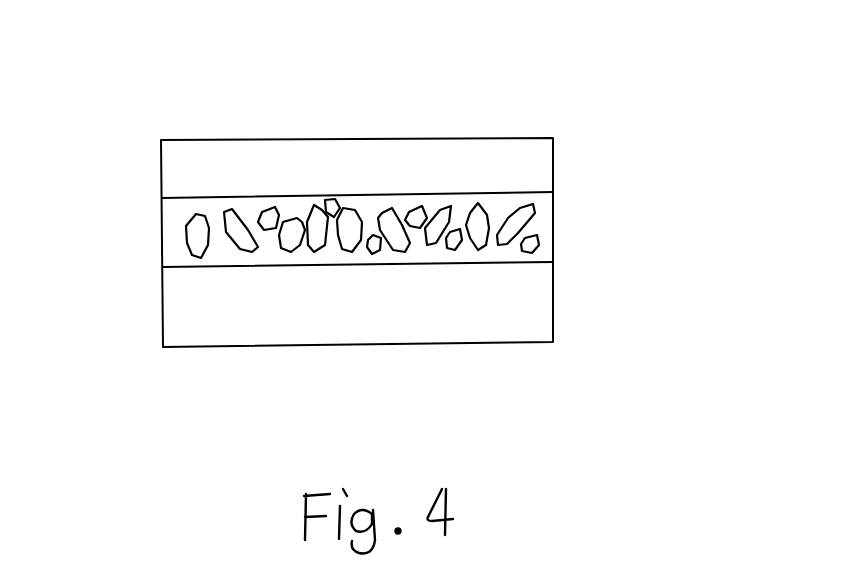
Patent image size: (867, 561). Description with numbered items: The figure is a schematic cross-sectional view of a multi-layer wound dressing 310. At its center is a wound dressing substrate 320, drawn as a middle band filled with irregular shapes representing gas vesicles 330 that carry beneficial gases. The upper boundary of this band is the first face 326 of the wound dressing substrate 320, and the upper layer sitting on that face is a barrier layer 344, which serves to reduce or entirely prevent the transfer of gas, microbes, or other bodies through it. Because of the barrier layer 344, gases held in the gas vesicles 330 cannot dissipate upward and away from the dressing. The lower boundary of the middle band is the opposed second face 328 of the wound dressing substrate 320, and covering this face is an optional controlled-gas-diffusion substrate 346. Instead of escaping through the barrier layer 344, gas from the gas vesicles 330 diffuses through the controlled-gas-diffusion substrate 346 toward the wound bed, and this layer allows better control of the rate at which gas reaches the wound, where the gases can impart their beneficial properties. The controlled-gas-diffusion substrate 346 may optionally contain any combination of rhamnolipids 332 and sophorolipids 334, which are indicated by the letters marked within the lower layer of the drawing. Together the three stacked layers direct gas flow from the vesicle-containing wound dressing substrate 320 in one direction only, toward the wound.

The wound dressing 310 is at (345, 64).
The wound dressing substrate 320 is at (570, 225).
The first face 326 is at (407, 195).
The second face 328 is at (372, 263).
The gas vesicles 330 is at (197, 238).
The rhamnolipids 332 is at (260, 326).
The sophorolipids 334 is at (453, 328).
The barrier layer 344 is at (569, 172).
The controlled-gas-diffusion substrate 346 is at (570, 310).